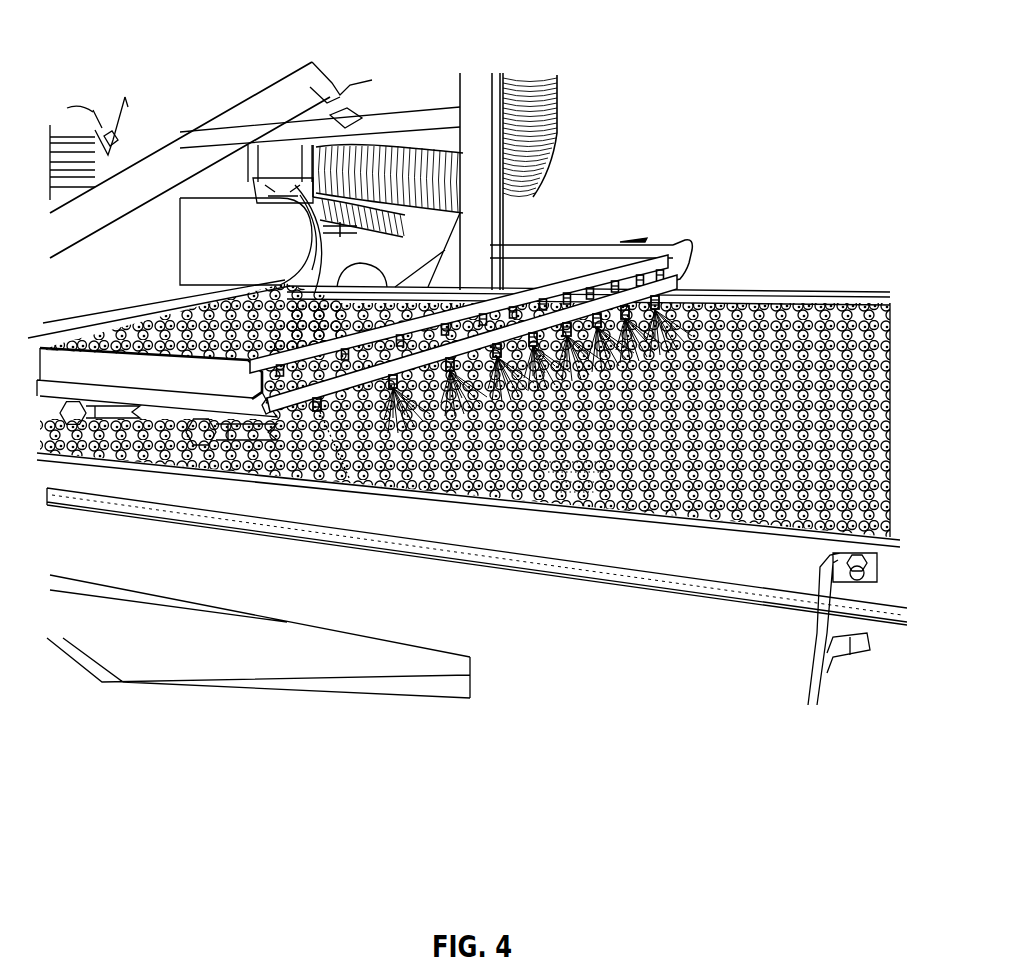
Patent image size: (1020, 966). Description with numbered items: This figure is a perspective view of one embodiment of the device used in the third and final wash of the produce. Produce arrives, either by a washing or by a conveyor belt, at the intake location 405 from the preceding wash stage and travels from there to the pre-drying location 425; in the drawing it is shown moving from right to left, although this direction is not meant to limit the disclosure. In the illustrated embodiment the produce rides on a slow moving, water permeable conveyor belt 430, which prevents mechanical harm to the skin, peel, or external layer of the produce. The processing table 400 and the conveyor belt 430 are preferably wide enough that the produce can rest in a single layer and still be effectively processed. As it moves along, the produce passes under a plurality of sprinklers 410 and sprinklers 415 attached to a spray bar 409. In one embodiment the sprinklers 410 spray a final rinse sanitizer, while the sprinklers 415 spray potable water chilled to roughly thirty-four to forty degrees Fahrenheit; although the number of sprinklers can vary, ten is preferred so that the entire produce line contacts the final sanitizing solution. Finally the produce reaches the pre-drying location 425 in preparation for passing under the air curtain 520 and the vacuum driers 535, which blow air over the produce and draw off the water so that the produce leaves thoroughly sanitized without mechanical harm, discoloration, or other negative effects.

The processing table 400 is at (521, 230).
The intake location 405 is at (831, 405).
The spray bar 409 is at (568, 266).
The sprinklers 410 is at (391, 408).
The sprinklers 415 is at (526, 285).
The pre-drying location 425 is at (266, 332).
The conveyor belt 430 is at (582, 468).
The air curtain 520 is at (196, 206).
The vacuum driers 535 is at (417, 145).